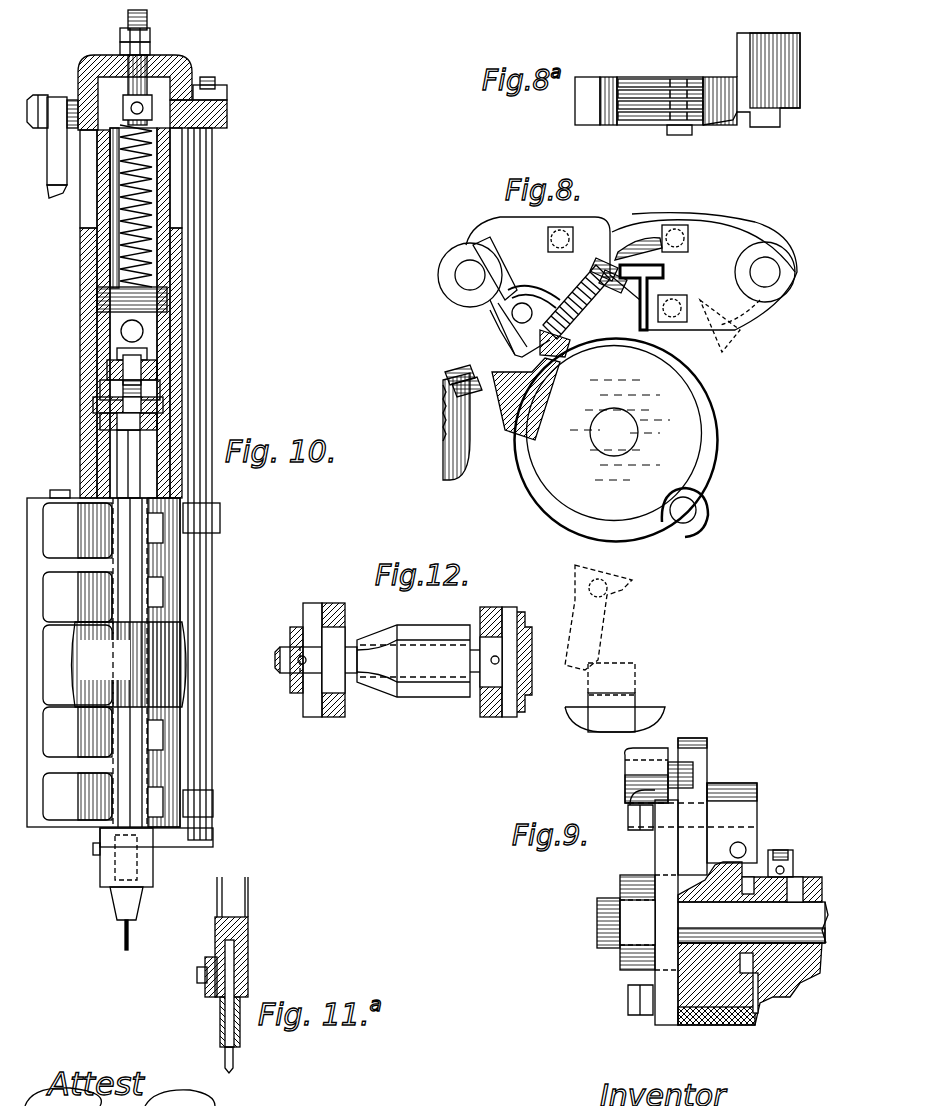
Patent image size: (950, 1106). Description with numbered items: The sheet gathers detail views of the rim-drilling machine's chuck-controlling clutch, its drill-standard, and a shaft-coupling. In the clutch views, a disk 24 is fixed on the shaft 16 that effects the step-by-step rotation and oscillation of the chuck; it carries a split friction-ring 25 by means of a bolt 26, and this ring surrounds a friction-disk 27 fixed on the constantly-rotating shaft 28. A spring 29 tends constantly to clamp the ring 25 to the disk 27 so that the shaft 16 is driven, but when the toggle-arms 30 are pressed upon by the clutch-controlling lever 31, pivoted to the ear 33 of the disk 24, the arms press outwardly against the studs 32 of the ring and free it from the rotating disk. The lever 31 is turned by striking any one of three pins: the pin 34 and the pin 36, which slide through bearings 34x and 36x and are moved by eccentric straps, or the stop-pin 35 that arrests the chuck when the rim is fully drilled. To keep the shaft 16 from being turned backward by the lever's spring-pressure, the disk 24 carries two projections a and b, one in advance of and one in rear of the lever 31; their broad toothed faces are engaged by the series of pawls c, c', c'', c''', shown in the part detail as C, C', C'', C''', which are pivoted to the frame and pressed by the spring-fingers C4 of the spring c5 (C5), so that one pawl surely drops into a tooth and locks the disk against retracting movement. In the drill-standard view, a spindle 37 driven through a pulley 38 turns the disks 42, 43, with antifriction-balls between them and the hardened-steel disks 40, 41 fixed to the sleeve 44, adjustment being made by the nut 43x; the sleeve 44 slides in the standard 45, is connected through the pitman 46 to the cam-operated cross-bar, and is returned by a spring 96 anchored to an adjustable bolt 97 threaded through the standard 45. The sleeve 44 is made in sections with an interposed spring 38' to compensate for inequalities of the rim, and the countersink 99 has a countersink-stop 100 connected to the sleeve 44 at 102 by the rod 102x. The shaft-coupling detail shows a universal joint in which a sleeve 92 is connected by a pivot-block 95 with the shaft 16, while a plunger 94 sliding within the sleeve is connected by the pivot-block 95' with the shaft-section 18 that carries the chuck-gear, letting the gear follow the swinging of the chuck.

In FIG. 10, the adjustable bolt 97 is at (152, 62).
In FIG. 10, the pitman 46 is at (54, 198).
In FIG. 10, the spring 96 is at (150, 218).
In FIG. 10, the standard 45 is at (183, 252).
In FIG. 10, the connection point on sleeve 102 is at (212, 135).
In FIG. 10, the rod 102x is at (212, 605).
In FIG. 10, the interposed spring 38' is at (100, 300).
In FIG. 10, the sleeve 44 is at (145, 340).
In FIG. 10, the nut 43x is at (150, 348).
In FIG. 10, the disk 42 is at (107, 370).
In FIG. 10, the hardened-steel disk 40 is at (100, 390).
In FIG. 10, the hardened-steel disk 41 is at (165, 402).
In FIG. 10, the disk 43 is at (100, 421).
In FIG. 10, the drill-spindle 37 is at (120, 460).
In FIG. 10, the pulley 38 is at (106, 662).
In FIG. 10, the countersink-stop 100 is at (140, 892).
In FIG. 10, the countersink 99 is at (124, 922).
In FIG. 8A, the pawl C'' is at (574, 101).
In FIG. 8A, the pawl C' is at (600, 115).
In FIG. 8A, the pawl C is at (660, 115).
In FIG. 8A, the pawl C''' is at (611, 61).
In FIG. 8A, the spring-fingers C4 is at (652, 85).
In FIG. 8A, the spring C5 is at (725, 100).
In FIG. 8, the clutch-controlling pin 34 is at (768, 268).
In FIG. 8, the bearing 34x is at (790, 275).
In FIG. 8, the projection b is at (635, 305).
In FIG. 8, the pawl c is at (645, 240).
In FIG. 8, the spring c5 is at (720, 220).
In FIG. 8, the clutch-controlling pin 36 is at (455, 276).
In FIG. 9, the clutch-controlling pin 36 is at (700, 762).
In FIG. 8, the bearing 36x is at (478, 243).
In FIG. 8, the clutch-controlling lever 31 is at (505, 322).
In FIG. 9, the clutch-controlling lever 31 is at (708, 768).
In FIG. 8, the ear 33 is at (525, 300).
In FIG. 9, the ear 33 is at (660, 812).
In FIG. 8, the toggle-arms 30 is at (518, 352).
In FIG. 8, the spring 29 is at (580, 270).
In FIG. 8, the studs 32 is at (614, 340).
In FIG. 8, the projection a is at (480, 440).
In FIG. 8, the split friction-ring 25 is at (717, 452).
In FIG. 9, the split friction-ring 25 is at (710, 1025).
In FIG. 8, the bolt 26 is at (697, 520).
In FIG. 9, the bolt 26 is at (660, 1010).
In FIG. 12, the shaft 16 is at (283, 675).
In FIG. 9, the shaft 16 is at (598, 945).
In FIG. 12, the pivot-block 95 is at (320, 675).
In FIG. 12, the sleeve 92 is at (448, 620).
In FIG. 12, the plunger 94 is at (375, 685).
In FIG. 12, the pivot-block 95' is at (486, 678).
In FIG. 12, the shaft-section 18 is at (530, 640).
In FIG. 9, the stop-pin 35 is at (625, 702).
In FIG. 9, the friction-disk 27 is at (668, 1028).
In FIG. 9, the constantly-rotating shaft 28 is at (753, 863).
In FIG. 9, the disk 24 is at (635, 970).